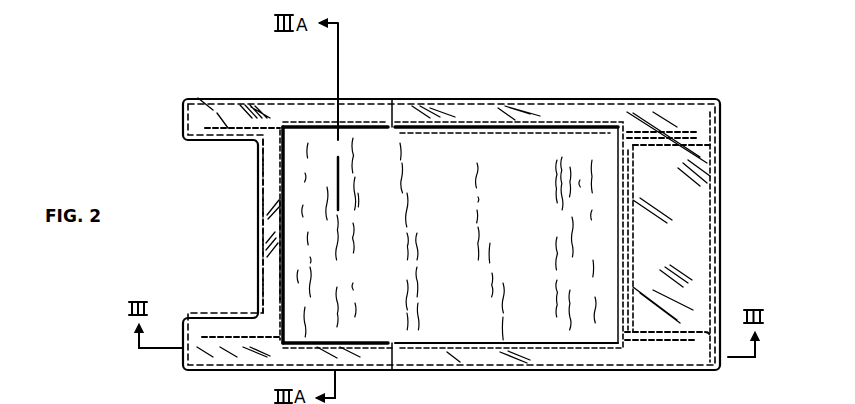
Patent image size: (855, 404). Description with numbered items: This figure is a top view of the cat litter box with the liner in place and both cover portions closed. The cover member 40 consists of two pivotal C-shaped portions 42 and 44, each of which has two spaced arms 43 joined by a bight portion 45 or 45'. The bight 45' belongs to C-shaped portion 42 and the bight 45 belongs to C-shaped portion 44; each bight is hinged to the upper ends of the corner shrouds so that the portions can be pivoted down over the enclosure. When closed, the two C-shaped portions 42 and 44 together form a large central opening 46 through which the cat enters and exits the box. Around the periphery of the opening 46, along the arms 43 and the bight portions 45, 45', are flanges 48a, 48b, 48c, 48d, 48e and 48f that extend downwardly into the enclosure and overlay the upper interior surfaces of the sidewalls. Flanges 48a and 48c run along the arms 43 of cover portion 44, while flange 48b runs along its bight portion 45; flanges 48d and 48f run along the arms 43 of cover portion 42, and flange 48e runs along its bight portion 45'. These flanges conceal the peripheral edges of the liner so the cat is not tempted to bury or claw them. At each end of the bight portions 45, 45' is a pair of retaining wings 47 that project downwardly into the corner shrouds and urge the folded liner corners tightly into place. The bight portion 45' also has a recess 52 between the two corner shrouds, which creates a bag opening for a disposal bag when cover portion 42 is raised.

The cover member 40 is at (432, 97).
The C-shaped portion 42 is at (366, 357).
The arms 43 is at (500, 357).
The C-shaped portion 44 is at (588, 118).
The bight portion 45 is at (690, 237).
The bight portion 45' is at (237, 228).
The central opening 46 is at (383, 228).
The retaining wings 47 is at (197, 98).
The flange 48a is at (462, 122).
The flange 48b is at (627, 270).
The flange 48c is at (557, 352).
The flange 48d is at (305, 122).
The flange 48e is at (275, 272).
The flange 48f is at (437, 352).
The recess 52 is at (243, 170).